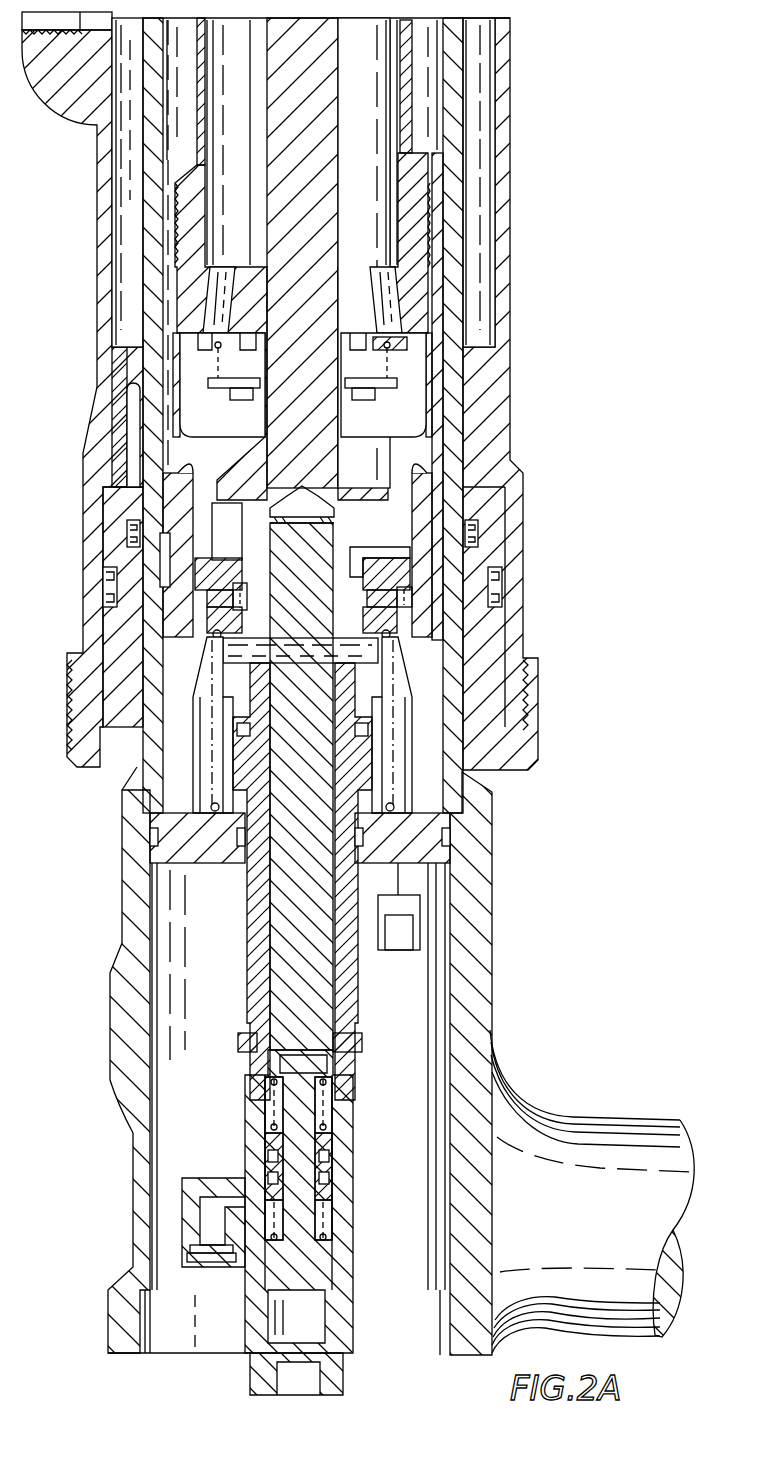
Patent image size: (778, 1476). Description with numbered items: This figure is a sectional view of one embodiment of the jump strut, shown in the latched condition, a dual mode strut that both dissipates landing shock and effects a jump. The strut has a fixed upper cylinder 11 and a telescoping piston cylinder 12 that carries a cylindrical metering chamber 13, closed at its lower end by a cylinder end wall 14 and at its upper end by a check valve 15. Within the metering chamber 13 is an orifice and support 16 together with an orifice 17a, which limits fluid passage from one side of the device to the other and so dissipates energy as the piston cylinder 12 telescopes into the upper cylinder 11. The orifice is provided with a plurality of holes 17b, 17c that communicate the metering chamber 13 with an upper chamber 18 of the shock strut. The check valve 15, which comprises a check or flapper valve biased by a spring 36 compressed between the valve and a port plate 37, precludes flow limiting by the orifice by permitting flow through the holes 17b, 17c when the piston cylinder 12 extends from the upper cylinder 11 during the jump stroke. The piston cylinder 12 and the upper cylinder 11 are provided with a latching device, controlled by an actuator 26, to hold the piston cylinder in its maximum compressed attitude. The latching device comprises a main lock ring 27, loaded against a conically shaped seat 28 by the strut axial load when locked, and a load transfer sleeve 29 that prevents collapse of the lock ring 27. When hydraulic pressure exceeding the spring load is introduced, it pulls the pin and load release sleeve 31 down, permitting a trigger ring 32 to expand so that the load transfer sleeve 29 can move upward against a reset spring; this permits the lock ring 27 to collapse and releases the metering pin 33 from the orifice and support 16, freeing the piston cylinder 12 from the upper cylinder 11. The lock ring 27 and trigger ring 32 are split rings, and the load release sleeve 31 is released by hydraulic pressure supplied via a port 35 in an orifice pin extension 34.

The fixed upper cylinder 11 is at (97, 262).
The telescoping piston cylinder 12 is at (466, 77).
The cylindrical metering chamber 13 is at (234, 463).
The cylinder end wall 14 is at (165, 850).
The check valve 15 is at (410, 342).
The orifice and support 16 is at (420, 295).
The orifice 17a is at (342, 247).
The hole 17b is at (230, 266).
The hole 17c is at (384, 266).
The upper chamber 18 is at (374, 126).
The actuator 26 is at (297, 1103).
The main lock ring 27 is at (400, 570).
The conically shaped seat 28 is at (405, 598).
The load transfer sleeve 29 is at (367, 552).
The load release sleeve 31 is at (397, 628).
The trigger ring 32 is at (385, 615).
The metering pin 33 is at (350, 797).
The orifice pin extension 34 is at (265, 1357).
The port 35 is at (210, 1240).
The spring 36 is at (393, 380).
The port plate 37 is at (378, 390).